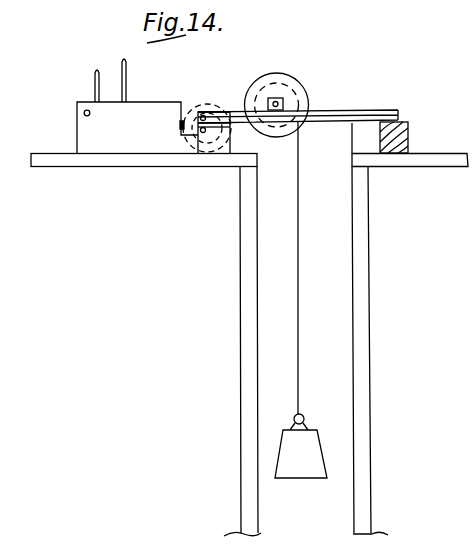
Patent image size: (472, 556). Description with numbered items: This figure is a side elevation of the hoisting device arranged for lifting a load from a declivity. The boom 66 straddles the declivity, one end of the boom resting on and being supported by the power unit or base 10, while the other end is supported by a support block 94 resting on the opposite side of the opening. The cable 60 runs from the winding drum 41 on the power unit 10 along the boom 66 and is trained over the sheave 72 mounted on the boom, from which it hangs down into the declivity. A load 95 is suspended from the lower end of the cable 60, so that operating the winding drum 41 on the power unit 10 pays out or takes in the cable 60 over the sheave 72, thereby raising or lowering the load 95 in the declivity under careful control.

The power unit 10 is at (72, 128).
The winding drum 41 is at (200, 109).
The cable 60 is at (209, 111).
The boom 66 is at (333, 109).
The sheave 72 is at (277, 74).
The support block 94 is at (408, 132).
The load 95 is at (303, 470).